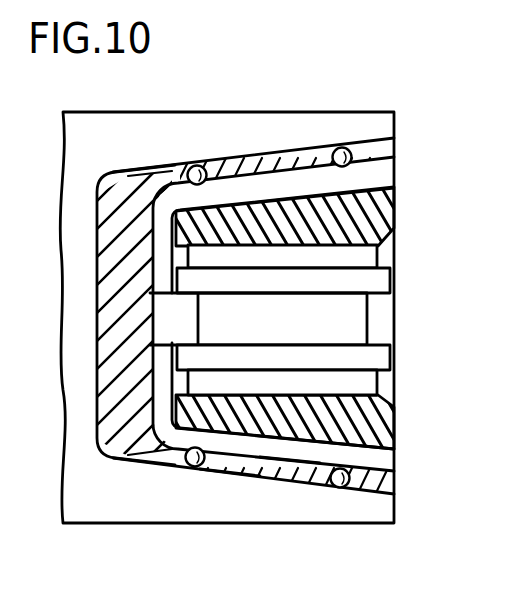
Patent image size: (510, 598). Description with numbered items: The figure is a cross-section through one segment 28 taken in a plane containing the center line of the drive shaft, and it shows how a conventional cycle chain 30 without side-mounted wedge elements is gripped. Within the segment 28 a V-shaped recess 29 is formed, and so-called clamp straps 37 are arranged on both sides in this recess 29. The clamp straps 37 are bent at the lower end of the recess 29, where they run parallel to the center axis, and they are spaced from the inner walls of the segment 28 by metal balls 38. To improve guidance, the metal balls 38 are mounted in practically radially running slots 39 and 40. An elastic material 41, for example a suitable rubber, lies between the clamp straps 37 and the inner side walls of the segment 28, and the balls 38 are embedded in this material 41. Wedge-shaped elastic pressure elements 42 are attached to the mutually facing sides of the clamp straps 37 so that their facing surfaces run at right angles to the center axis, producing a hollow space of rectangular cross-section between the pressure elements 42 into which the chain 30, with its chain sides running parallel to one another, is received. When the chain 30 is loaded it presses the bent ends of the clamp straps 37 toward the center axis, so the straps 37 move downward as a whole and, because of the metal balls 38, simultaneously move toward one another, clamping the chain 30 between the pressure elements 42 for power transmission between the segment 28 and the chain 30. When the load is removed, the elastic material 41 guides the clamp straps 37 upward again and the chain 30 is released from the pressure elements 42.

The segment 28 is at (244, 121).
The V-shaped recess 29 is at (380, 141).
The cycle chain 30 is at (356, 318).
The clamp strap 37 is at (383, 181).
The metal ball 38 is at (197, 165).
The slot 39 is at (227, 473).
The slot 40 is at (283, 460).
The elastic material 41 is at (140, 445).
The wedge-shaped elastic pressure element 42 is at (384, 222).